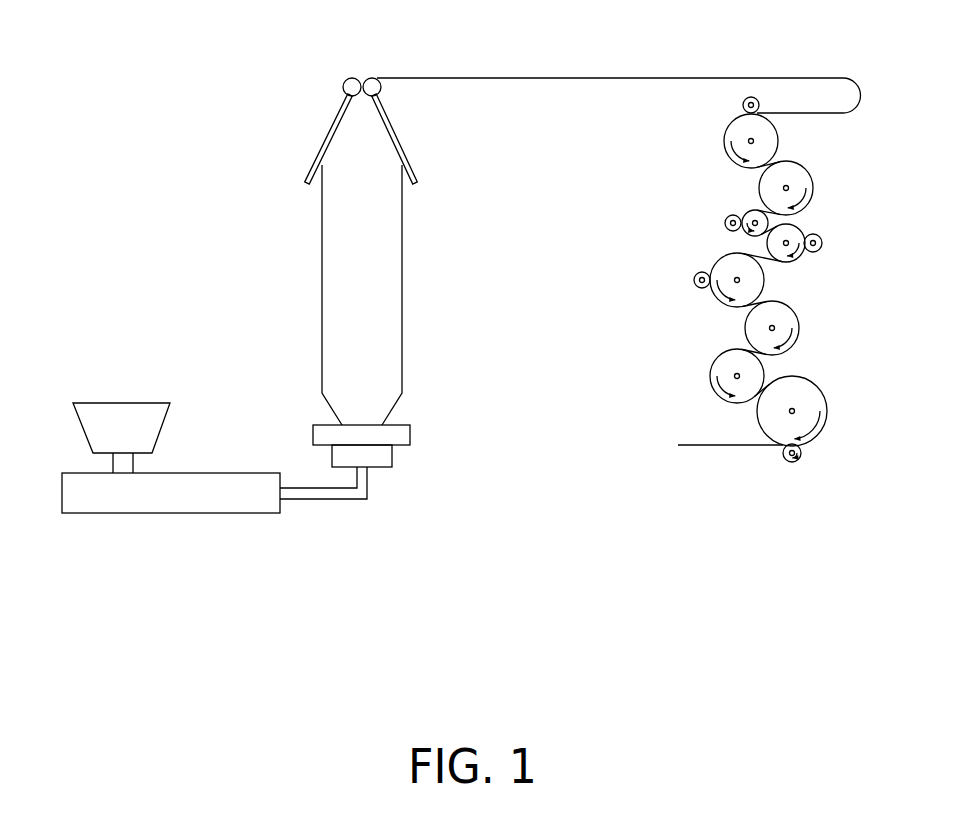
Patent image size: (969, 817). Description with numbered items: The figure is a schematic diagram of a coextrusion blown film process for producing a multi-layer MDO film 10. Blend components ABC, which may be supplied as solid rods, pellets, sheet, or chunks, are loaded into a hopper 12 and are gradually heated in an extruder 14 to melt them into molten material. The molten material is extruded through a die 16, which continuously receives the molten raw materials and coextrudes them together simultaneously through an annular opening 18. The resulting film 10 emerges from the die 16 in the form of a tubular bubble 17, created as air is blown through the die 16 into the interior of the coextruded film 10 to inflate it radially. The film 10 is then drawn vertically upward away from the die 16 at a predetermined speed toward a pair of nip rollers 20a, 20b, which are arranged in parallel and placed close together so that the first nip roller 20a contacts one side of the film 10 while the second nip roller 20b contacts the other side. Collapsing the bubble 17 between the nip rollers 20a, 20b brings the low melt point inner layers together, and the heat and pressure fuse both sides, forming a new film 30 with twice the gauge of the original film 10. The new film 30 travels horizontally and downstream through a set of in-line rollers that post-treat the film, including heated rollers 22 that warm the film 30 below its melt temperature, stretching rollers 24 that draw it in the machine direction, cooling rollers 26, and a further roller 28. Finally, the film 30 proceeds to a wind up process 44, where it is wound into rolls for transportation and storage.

The film 10 is at (402, 275).
The hopper 12 is at (83, 430).
The extruder 14 is at (175, 513).
The die 16 is at (380, 470).
The tubular bubble 17 is at (300, 252).
The annular opening 18 is at (410, 428).
The first nip roller 20a is at (342, 88).
The second nip roller 20b is at (383, 89).
The heated rollers 22 is at (798, 140).
The stretching rollers 24 is at (826, 216).
The cooling rollers 26 is at (820, 318).
The in-line roller 28 is at (855, 396).
The new film 30 is at (520, 78).
The wind up process 44 is at (672, 445).
The blend components ABC is at (122, 380).